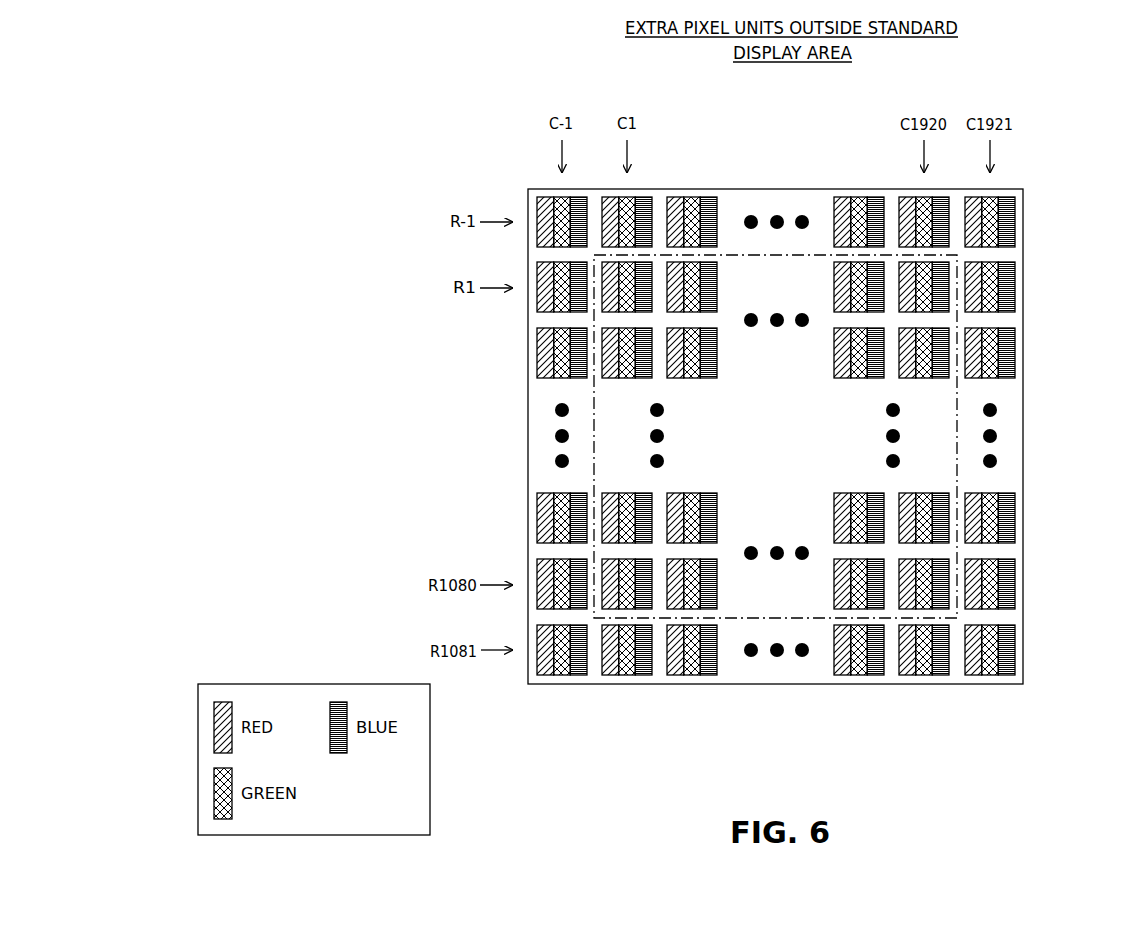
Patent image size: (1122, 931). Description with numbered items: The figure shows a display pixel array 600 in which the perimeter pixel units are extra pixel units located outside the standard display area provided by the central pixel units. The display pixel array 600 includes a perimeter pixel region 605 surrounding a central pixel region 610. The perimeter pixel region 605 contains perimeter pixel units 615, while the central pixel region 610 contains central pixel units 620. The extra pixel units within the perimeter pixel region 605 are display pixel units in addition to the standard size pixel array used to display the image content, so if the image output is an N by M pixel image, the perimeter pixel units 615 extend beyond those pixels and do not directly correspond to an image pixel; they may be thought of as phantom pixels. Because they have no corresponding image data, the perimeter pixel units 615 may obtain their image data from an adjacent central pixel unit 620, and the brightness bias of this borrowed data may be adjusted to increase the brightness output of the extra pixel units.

The display pixel array 600 is at (445, 143).
The perimeter pixel region 605 is at (766, 193).
The central pixel region 610 is at (742, 445).
The perimeter pixel units 615 is at (547, 486).
The central pixel units 620 is at (731, 363).